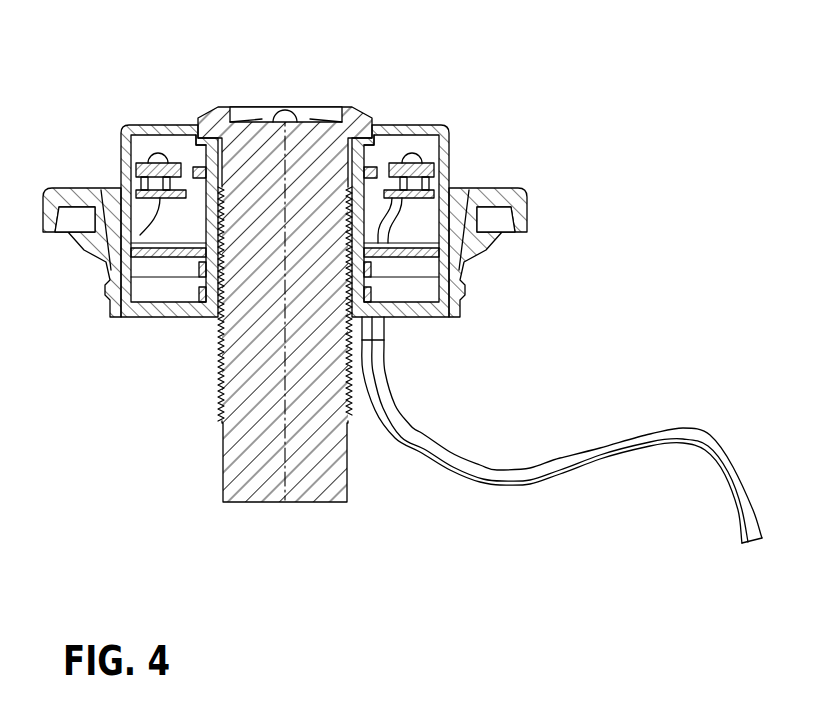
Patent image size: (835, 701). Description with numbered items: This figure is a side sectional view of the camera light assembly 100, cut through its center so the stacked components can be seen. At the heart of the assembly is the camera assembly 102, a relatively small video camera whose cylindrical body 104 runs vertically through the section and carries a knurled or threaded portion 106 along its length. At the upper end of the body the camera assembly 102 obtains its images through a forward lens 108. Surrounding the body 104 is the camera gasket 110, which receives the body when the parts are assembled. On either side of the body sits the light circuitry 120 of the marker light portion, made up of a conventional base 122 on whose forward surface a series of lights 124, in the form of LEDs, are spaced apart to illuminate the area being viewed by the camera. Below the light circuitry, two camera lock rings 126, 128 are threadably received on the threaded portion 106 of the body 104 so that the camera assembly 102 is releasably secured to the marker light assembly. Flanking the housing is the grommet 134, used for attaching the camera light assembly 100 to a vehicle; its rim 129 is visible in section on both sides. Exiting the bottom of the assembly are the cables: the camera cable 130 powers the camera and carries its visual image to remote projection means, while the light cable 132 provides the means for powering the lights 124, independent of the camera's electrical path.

The camera light assembly 100 is at (470, 80).
The camera assembly 102 is at (171, 379).
The cylindrical body 104 is at (235, 498).
The knurled or threaded portion 106 is at (219, 386).
The forward lens 108 is at (303, 107).
The camera gasket 110 is at (193, 144).
The light circuitry 120 is at (190, 135).
The base 122 is at (158, 199).
The lights 124 is at (160, 152).
The camera lock ring 126 is at (200, 269).
The camera lock ring 128 is at (199, 294).
The rim 129 is at (53, 202).
The camera cable 130 is at (420, 432).
The light cable 132 is at (390, 437).
The grommet 134 is at (47, 172).